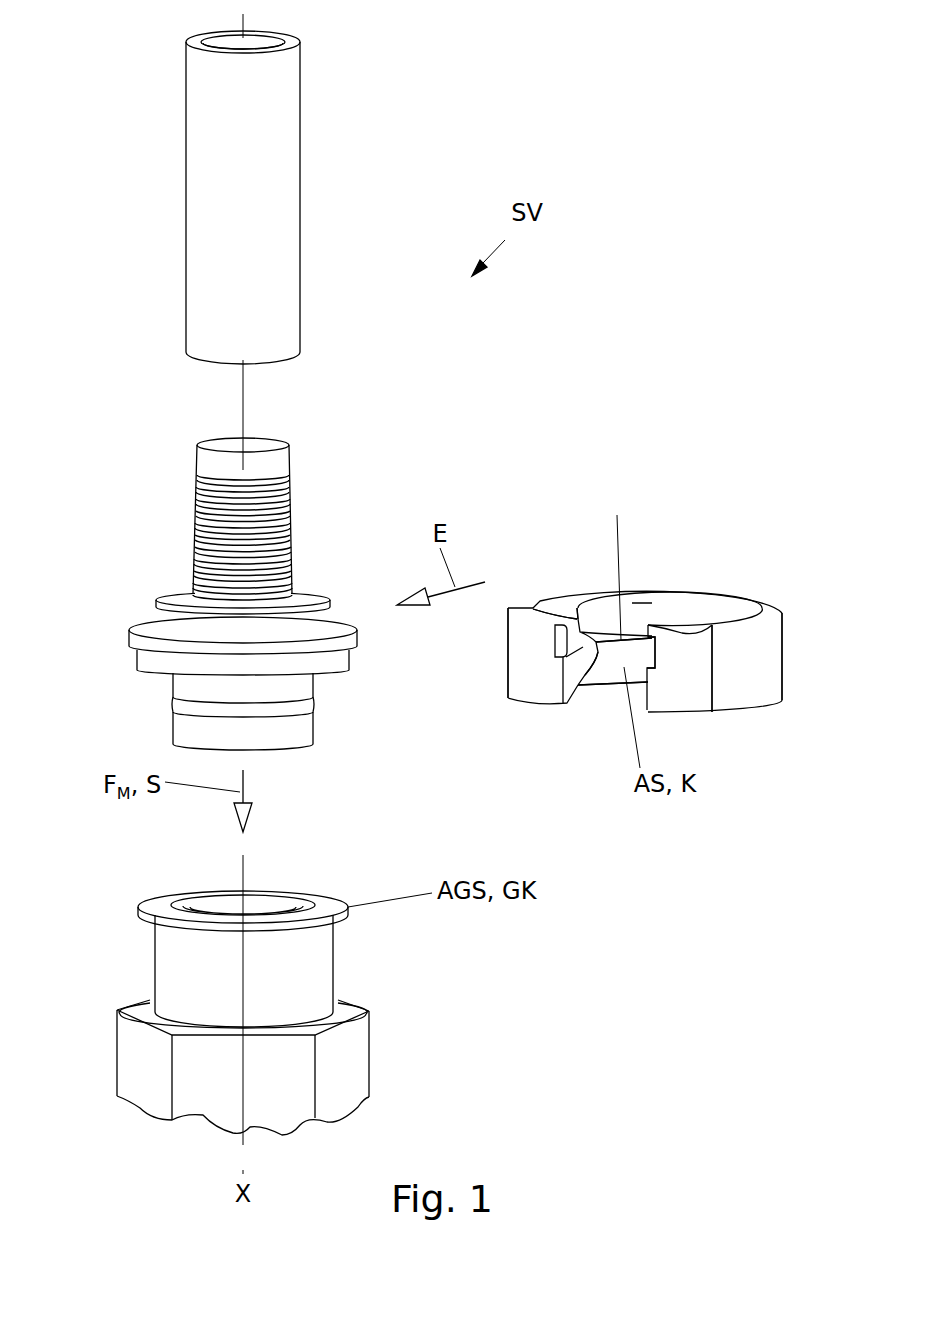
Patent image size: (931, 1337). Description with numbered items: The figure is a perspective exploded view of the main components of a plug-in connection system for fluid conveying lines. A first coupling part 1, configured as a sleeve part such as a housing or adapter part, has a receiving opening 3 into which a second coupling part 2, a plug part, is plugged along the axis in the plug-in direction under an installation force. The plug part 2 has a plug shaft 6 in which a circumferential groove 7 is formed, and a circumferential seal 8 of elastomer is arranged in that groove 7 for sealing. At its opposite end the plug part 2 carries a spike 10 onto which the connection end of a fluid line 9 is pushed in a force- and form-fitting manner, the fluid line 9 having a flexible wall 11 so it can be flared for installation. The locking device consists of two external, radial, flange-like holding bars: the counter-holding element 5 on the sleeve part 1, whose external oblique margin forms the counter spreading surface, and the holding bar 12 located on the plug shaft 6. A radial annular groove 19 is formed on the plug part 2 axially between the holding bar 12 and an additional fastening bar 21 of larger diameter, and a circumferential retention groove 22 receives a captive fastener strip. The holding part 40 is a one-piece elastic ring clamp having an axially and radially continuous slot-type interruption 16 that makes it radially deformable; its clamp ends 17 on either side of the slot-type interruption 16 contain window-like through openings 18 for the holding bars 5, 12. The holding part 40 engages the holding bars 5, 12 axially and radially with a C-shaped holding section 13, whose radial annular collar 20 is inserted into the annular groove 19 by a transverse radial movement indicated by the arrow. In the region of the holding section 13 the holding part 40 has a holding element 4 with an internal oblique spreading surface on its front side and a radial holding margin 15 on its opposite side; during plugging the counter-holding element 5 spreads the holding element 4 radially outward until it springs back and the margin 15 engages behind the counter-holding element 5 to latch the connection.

The first coupling part 1 is at (388, 992).
The second coupling part 2 is at (378, 499).
The receiving opening 3 is at (266, 889).
The holding element 4 is at (610, 653).
The counter-holding element 5 is at (350, 925).
The plug shaft 6 is at (293, 730).
The groove 7 is at (313, 712).
The circumferential seal 8 is at (177, 703).
The fluid line 9 is at (288, 221).
The spike 10 is at (272, 463).
The flexible wall 11 is at (270, 123).
The holding bar 12 is at (332, 664).
The C-shaped holding section 13 is at (594, 575).
The radial holding margin 15 is at (615, 563).
The slot-type interruption 16 is at (609, 715).
The clamp ends 17 is at (530, 660).
The window-like through openings 18 is at (553, 642).
The radial annular groove 19 is at (145, 653).
The radial annular collar 20 is at (708, 600).
The fastening bar 21 is at (135, 618).
The circumferential retention groove 22 is at (153, 625).
The holding part 40 is at (669, 552).